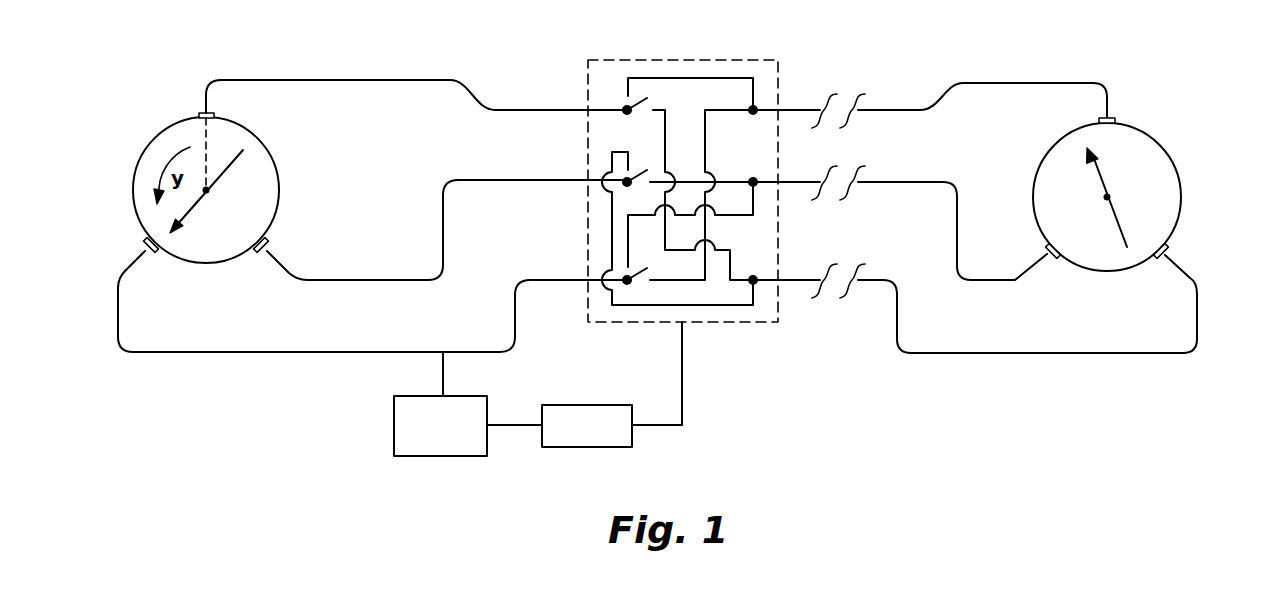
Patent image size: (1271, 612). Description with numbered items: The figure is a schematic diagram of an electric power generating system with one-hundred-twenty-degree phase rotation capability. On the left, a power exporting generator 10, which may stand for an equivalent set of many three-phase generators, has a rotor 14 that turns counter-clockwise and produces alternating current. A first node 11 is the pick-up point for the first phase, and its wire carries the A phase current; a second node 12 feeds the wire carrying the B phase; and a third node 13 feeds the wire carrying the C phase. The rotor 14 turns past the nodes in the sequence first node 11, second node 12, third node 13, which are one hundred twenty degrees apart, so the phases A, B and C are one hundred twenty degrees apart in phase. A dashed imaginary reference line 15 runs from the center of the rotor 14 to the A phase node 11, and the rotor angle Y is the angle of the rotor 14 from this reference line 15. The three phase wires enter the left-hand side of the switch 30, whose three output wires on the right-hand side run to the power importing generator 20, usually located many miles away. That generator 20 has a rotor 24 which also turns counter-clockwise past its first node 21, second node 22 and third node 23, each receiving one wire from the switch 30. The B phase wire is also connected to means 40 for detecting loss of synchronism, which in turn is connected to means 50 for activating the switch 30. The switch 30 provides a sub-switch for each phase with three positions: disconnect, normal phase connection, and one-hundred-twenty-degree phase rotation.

The power exporting generator 10 is at (138, 157).
The first node 11 is at (197, 113).
The second node 12 is at (147, 243).
The third node 13 is at (270, 237).
The rotor 14 is at (190, 205).
The reference line 15 is at (197, 143).
The power importing generator 20 is at (1173, 153).
The first node 21 is at (1122, 120).
The second node 22 is at (1045, 249).
The third node 23 is at (1170, 252).
The rotor 24 is at (1105, 175).
The switch 30 is at (779, 74).
The means for detecting loss of synchronism 40 is at (490, 400).
The means for activating switch 50 is at (582, 403).
The A phase A is at (510, 103).
The B phase B is at (455, 348).
The C phase C is at (510, 175).